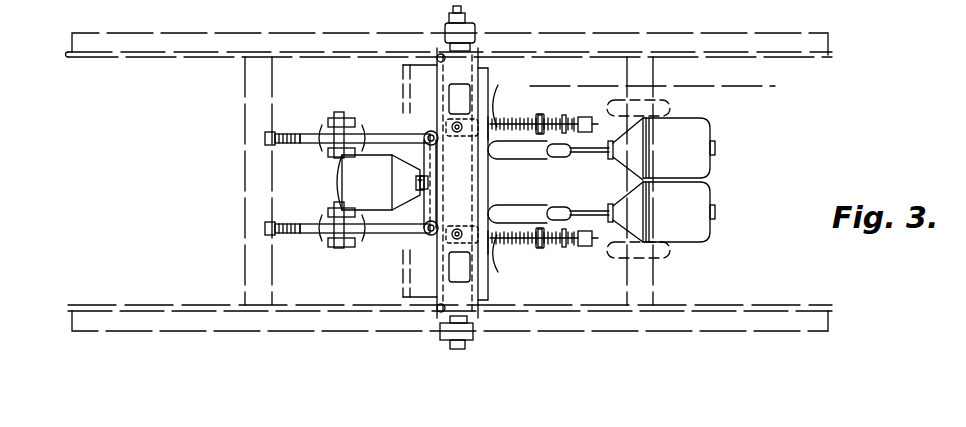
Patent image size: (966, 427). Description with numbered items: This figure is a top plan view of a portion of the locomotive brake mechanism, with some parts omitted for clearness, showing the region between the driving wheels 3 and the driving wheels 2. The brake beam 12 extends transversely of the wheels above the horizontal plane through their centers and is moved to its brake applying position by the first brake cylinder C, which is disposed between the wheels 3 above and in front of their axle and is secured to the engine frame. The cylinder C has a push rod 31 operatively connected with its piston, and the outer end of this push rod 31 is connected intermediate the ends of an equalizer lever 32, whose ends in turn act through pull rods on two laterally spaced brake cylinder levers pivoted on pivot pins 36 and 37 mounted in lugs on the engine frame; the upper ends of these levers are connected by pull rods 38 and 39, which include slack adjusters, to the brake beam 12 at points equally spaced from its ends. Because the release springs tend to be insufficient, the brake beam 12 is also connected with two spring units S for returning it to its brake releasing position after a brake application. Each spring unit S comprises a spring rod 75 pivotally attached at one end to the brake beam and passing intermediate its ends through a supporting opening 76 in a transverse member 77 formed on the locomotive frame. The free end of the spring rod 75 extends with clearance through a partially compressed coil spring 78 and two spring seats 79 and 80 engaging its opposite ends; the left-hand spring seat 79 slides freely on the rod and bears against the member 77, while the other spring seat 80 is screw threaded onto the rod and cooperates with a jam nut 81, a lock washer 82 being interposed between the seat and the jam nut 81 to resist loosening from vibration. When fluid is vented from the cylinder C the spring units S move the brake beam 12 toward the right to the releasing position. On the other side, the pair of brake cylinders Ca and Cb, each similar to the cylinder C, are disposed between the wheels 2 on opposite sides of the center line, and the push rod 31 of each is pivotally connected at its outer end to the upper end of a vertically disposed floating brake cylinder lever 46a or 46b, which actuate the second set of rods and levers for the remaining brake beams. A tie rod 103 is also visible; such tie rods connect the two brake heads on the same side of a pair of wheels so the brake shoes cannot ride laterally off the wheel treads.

The wheels 3 is at (195, 33).
The wheels 2 is at (654, 33).
The brake beam 12 is at (478, 51).
The push rod 31 is at (592, 175).
The equalizer lever 32 is at (440, 180).
The tie rod 103 is at (403, 65).
The transverse member 77 is at (488, 70).
The pull rod 39 is at (395, 128).
The pull rod 38 is at (378, 240).
The pivot pin 37 is at (348, 108).
The pivot pin 36 is at (328, 209).
The brake cylinder C is at (340, 173).
The coil spring 78 is at (527, 282).
The spring seat 79 is at (502, 187).
The spring unit S is at (556, 117).
The spring seat 80 is at (582, 118).
The jam nut 81 is at (588, 282).
The lock washer 82 is at (567, 282).
The spring rod 75 is at (612, 100).
The supporting opening 76 is at (517, 182).
The brake cylinder lever 46a is at (558, 156).
The brake cylinder lever 46b is at (562, 206).
The brake cylinder Ca is at (705, 132).
The brake cylinder Cb is at (703, 186).